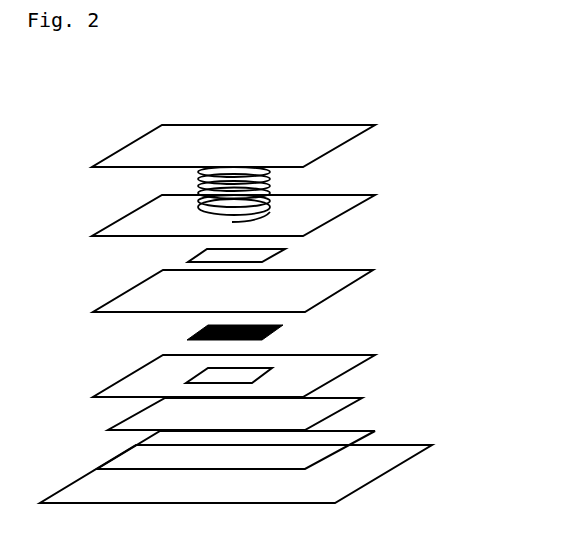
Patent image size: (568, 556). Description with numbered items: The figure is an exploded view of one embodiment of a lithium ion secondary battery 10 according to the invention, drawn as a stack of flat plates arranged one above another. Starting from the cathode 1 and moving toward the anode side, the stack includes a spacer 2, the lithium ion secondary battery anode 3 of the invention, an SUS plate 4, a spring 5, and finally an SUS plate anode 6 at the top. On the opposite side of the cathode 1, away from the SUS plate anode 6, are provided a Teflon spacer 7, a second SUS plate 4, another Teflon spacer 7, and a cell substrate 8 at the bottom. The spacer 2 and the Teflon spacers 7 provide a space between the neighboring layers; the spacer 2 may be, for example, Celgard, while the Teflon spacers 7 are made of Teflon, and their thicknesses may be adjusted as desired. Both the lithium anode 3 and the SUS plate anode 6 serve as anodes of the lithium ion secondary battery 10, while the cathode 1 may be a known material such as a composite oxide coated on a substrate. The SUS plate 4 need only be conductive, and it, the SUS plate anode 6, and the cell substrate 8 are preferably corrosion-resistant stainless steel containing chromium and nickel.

The lithium ion secondary battery 10 is at (470, 113).
The SUS plate anode 6 is at (375, 125).
The spring 5 is at (270, 185).
The SUS plate 4 is at (375, 195).
The lithium ion secondary battery anode 3 is at (285, 249).
The spacer 2 is at (373, 270).
The cathode 1 is at (283, 327).
The Teflon spacer 7 is at (375, 355).
The cell substrate 8 is at (390, 465).